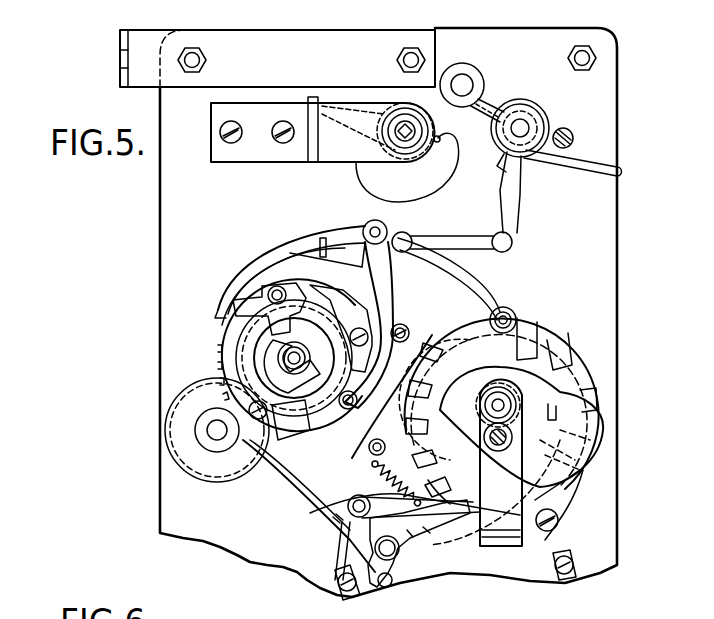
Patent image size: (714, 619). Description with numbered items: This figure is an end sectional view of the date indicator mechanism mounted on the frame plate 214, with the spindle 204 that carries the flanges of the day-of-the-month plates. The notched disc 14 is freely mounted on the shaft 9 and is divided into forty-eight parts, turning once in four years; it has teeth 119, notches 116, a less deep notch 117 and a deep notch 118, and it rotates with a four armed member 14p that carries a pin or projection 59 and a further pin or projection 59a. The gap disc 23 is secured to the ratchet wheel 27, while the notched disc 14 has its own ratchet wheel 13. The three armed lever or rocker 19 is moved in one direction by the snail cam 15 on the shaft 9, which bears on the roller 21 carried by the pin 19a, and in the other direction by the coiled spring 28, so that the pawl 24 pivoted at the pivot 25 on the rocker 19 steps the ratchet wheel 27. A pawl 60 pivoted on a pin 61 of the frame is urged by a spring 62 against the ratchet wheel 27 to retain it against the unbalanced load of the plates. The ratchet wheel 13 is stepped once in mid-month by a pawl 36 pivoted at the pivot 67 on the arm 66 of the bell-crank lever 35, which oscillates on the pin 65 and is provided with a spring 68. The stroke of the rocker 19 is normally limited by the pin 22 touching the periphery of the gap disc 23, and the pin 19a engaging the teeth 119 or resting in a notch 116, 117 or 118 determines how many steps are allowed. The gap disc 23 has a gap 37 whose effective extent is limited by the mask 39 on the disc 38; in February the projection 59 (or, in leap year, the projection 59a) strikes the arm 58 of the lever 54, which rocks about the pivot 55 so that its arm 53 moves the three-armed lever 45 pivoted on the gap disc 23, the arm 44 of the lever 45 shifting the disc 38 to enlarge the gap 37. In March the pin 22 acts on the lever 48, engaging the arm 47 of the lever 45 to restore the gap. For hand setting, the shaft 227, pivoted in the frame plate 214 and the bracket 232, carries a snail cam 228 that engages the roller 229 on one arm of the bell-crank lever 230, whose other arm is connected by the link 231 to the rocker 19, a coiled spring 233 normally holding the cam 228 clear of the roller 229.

The shaft 9 is at (505, 405).
The ratchet wheel 13 is at (551, 525).
The notched disc 14 is at (556, 355).
The four armed member 14p is at (492, 356).
The snail cam 15 is at (510, 437).
The three armed lever or rocker 19 is at (418, 268).
The pin 19a is at (508, 310).
The roller 21 is at (503, 306).
The pin 22 is at (357, 401).
The gap disc 23 is at (240, 360).
The pawl 24 is at (302, 238).
The pivot 25 is at (370, 228).
The ratchet wheel 27 is at (250, 324).
The coiled spring 28 is at (588, 155).
The bell-crank lever 35 is at (323, 440).
The pawl 36 is at (343, 583).
The gap 37 is at (377, 439).
The disc 38 is at (290, 374).
The mask 39 is at (250, 440).
The arm 44 is at (280, 330).
The three-armed lever 45 is at (244, 300).
The arm 47 is at (276, 286).
The lever 48 is at (350, 320).
The arm 53 is at (297, 440).
The lever 54 is at (390, 560).
The pivot 55 is at (407, 540).
The arm 58 is at (413, 540).
The pin or projection 59 is at (487, 365).
The pin or projection 59a is at (556, 410).
The pawl 60 is at (350, 440).
The pin 61 is at (290, 505).
The spring 62 is at (352, 495).
The pin 65 is at (350, 447).
The arm 66 is at (337, 458).
The pivot 67 is at (350, 490).
The spring 68 is at (450, 545).
The notch 116 is at (585, 345).
The notch 117 is at (418, 360).
The deep notch 118 is at (536, 322).
The teeth 119 is at (446, 345).
The spindle 204 is at (207, 432).
The frame plate 214 is at (160, 204).
The shaft 227 is at (404, 127).
The snail cam 228 is at (446, 170).
The roller 229 is at (466, 74).
The bell-crank lever 230 is at (490, 96).
The link 231 is at (462, 240).
The bracket 232 is at (328, 150).
The coiled spring 233 is at (316, 98).